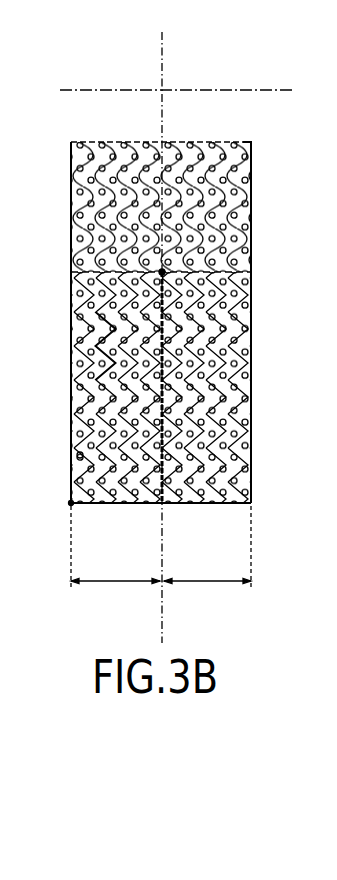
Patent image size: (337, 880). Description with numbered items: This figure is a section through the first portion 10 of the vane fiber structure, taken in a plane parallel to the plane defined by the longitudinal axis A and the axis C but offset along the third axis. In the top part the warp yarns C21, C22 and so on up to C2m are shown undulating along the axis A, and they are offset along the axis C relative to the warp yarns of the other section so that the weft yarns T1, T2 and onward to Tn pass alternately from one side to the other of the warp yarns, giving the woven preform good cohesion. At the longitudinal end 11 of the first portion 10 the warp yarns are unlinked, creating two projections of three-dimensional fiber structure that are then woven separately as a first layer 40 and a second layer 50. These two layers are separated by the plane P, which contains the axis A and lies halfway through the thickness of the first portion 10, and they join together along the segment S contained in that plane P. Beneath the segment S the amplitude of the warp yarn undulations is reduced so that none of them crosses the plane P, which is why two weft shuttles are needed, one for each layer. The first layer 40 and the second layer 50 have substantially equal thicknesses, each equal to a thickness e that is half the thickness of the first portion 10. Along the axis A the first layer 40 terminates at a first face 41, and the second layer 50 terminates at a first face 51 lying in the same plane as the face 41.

The first portion 10 is at (70, 222).
The longitudinal end 11 is at (165, 410).
The second layer 50 is at (87, 410).
The first layer 40 is at (239, 410).
The first face 51 is at (130, 503).
The first face 41 is at (203, 503).
The weft yarn Tn is at (233, 142).
The weft yarn T2 is at (78, 455).
The weft yarn T1 is at (70, 501).
The warp yarn C21 is at (72, 486).
The warp yarn C22 is at (107, 503).
The warp yarn C2m is at (251, 479).
The segment S is at (251, 264).
The longitudinal axis A is at (162, 326).
The axis C is at (187, 91).
The plane P is at (162, 630).
The thickness e is at (161, 547).